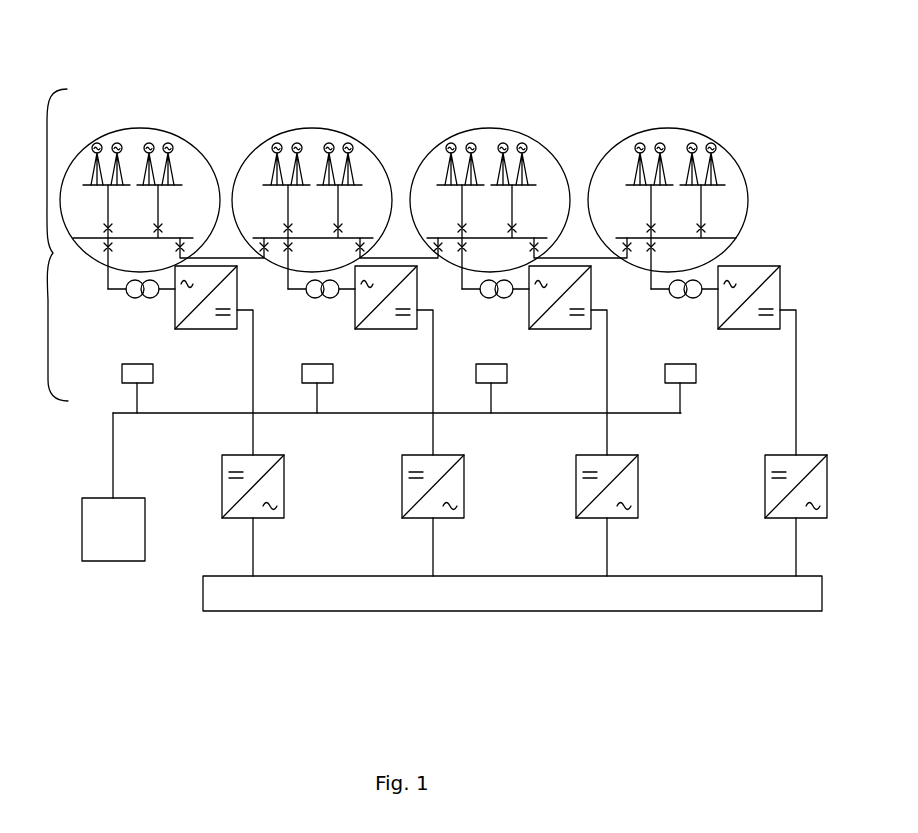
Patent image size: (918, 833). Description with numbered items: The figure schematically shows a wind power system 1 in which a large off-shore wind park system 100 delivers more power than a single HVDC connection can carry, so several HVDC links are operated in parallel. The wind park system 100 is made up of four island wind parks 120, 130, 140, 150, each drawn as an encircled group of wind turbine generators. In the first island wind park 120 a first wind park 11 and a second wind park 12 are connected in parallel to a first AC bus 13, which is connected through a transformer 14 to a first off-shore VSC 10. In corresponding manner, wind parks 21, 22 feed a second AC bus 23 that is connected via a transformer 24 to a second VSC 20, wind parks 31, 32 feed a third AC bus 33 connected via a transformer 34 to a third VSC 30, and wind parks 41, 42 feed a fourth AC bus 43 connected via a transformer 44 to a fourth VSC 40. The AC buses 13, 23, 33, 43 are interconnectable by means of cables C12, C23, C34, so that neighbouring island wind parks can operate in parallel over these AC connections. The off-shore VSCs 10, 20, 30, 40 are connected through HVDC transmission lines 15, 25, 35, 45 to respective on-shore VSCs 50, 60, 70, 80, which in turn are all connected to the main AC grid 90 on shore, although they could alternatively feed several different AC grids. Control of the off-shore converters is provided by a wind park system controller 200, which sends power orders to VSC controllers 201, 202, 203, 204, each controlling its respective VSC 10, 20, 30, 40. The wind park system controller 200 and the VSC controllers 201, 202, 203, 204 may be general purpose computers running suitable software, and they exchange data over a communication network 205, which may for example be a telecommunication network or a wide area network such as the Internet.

The wind power system 1 is at (80, 48).
The wind park system 100 is at (43, 245).
The island wind park 120 is at (100, 137).
The island wind park 130 is at (294, 131).
The island wind park 140 is at (472, 131).
The island wind park 150 is at (650, 130).
The first wind park 11 is at (85, 185).
The wind park 21 is at (265, 185).
The wind park 31 is at (439, 185).
The wind park 41 is at (630, 186).
The second wind park 12 is at (146, 185).
The wind park 22 is at (326, 185).
The wind park 32 is at (500, 185).
The wind park 42 is at (688, 185).
The first AC bus 13 is at (86, 238).
The second AC bus 23 is at (266, 238).
The third AC bus 33 is at (440, 238).
The fourth AC bus 43 is at (629, 238).
The transformer 14 is at (130, 297).
The transformer 24 is at (310, 297).
The transformer 34 is at (484, 297).
The transformer 44 is at (673, 297).
The first VSC 10 is at (176, 320).
The second VSC 20 is at (356, 320).
The third VSC 30 is at (530, 320).
The fourth VSC 40 is at (719, 320).
The VSC controller 201 is at (153, 372).
The VSC controller 202 is at (333, 372).
The VSC controller 203 is at (507, 372).
The VSC controller 204 is at (696, 372).
The communication network 205 is at (113, 458).
The wind park system controller 200 is at (82, 525).
The cable C12 is at (222, 250).
The cable C23 is at (399, 250).
The cable C34 is at (580, 250).
The HVDC transmission line 15 is at (253, 443).
The HVDC transmission line 25 is at (433, 443).
The HVDC transmission line 35 is at (607, 443).
The HVDC transmission line 45 is at (796, 443).
The on-shore VSC 50 is at (222, 503).
The on-shore VSC 60 is at (402, 503).
The on-shore VSC 70 is at (576, 503).
The on-shore VSC 80 is at (765, 503).
The main AC grid 90 is at (594, 612).